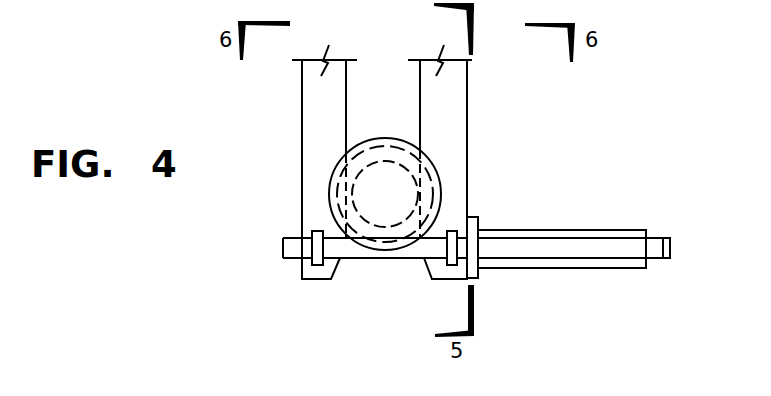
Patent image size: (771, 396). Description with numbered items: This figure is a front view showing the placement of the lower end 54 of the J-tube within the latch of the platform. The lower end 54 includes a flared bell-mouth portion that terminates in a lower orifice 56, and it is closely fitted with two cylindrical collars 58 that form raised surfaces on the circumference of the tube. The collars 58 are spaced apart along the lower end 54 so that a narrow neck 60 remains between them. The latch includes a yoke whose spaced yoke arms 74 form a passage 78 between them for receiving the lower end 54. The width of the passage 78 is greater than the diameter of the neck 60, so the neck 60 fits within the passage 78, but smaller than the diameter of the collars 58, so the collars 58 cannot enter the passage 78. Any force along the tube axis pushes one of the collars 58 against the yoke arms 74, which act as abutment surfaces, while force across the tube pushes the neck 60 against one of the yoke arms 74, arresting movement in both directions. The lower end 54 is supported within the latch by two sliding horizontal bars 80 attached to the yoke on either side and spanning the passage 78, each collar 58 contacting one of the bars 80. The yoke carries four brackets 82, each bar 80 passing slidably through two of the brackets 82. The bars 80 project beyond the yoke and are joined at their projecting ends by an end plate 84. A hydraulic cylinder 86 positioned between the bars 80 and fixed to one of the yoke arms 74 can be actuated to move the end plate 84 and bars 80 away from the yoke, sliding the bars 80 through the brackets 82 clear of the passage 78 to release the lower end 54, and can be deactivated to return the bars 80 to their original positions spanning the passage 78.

The lower end of J-tube 54 is at (399, 211).
The lower orifice 56 is at (440, 202).
The cylindrical collars 58 is at (435, 190).
The neck 60 is at (416, 176).
The yoke arms 74 is at (318, 120).
The passage 78 is at (398, 107).
The sliding horizontal bars 80 is at (352, 258).
The brackets 82 is at (320, 268).
The end plate 84 is at (665, 258).
The hydraulic cylinder 86 is at (595, 235).